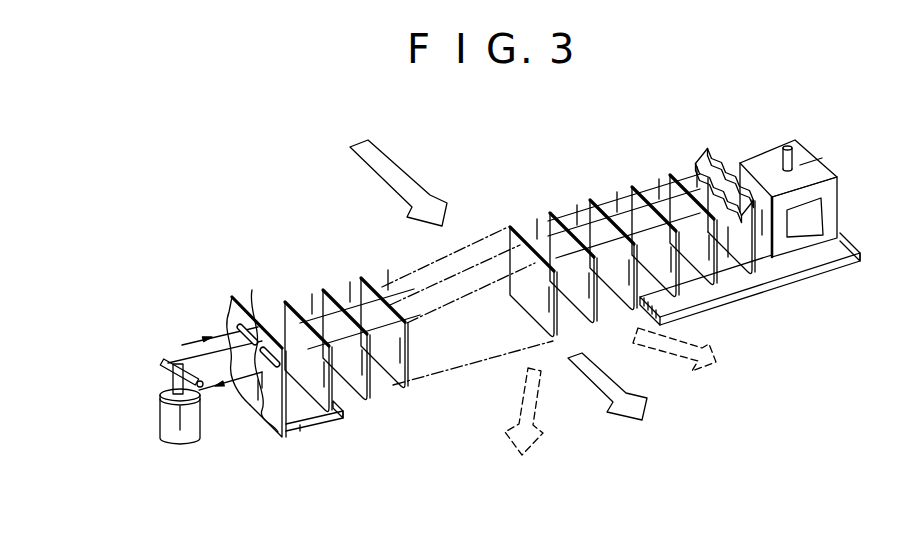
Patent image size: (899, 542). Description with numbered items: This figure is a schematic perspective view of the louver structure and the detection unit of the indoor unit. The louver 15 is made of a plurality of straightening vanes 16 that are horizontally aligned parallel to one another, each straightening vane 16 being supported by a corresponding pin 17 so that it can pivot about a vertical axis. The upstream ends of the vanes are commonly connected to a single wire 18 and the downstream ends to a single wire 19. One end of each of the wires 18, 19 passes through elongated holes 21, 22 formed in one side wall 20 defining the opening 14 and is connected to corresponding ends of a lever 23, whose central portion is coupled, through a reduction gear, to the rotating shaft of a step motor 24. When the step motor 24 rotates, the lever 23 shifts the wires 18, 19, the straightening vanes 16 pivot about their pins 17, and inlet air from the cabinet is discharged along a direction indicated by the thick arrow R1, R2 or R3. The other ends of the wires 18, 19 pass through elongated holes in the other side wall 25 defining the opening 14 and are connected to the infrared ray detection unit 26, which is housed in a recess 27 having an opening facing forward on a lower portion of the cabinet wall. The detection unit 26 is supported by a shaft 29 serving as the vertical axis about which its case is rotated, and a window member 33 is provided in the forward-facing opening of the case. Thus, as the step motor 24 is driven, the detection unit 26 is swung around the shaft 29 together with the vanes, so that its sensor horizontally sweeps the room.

The opening 14 is at (308, 410).
The louver 15 is at (400, 380).
The straightening vane 16 is at (456, 305).
The pin 17 is at (310, 303).
The wire 18 is at (590, 204).
The wire 19 is at (682, 224).
The side wall 20 is at (238, 391).
The elongated hole 21 is at (233, 308).
The elongated hole 22 is at (275, 418).
The lever 23 is at (160, 360).
The step motor 24 is at (160, 425).
The side wall 25 is at (757, 262).
The infrared ray detection unit 26 is at (812, 202).
The recess 27 is at (838, 205).
The shaft 29 is at (792, 152).
The window member 33 is at (810, 243).
The thick arrow R1 is at (520, 405).
The thick arrow R2 is at (587, 378).
The thick arrow R3 is at (662, 352).